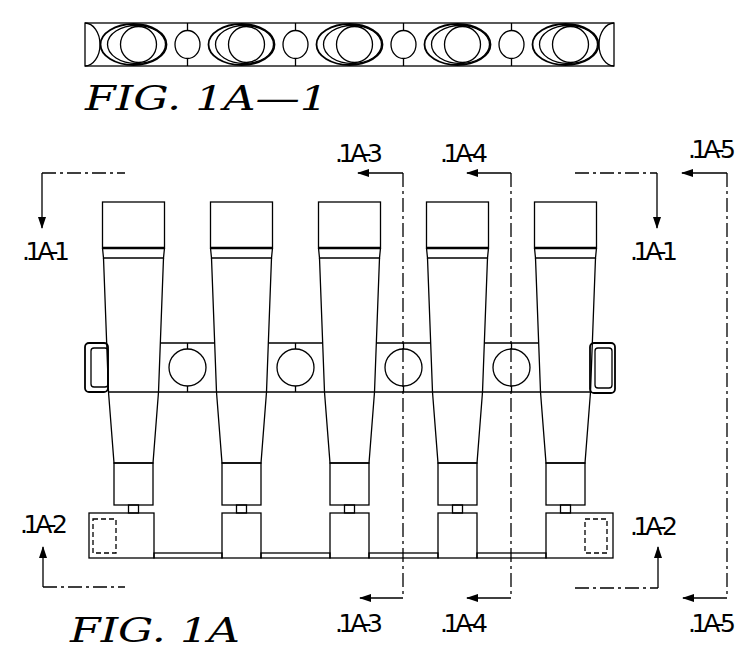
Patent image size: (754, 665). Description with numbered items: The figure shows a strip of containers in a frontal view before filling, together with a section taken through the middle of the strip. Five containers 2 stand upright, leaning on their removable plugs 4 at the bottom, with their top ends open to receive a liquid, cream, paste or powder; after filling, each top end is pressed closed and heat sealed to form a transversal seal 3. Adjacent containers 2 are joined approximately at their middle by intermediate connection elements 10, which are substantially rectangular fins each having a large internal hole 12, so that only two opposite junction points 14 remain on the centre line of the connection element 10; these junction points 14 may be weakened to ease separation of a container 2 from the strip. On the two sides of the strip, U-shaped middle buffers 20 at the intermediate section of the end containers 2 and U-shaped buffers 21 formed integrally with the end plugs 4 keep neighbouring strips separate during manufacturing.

The container 2 is at (583, 293).
The transversal seal 3 is at (155, 222).
The removable plug 4 is at (233, 548).
The intermediate connection element 10 is at (170, 392).
The internal hole 12 is at (177, 365).
The junction point 14 is at (295, 348).
The middle buffer 20 is at (83, 367).
The buffer 21 is at (105, 525).